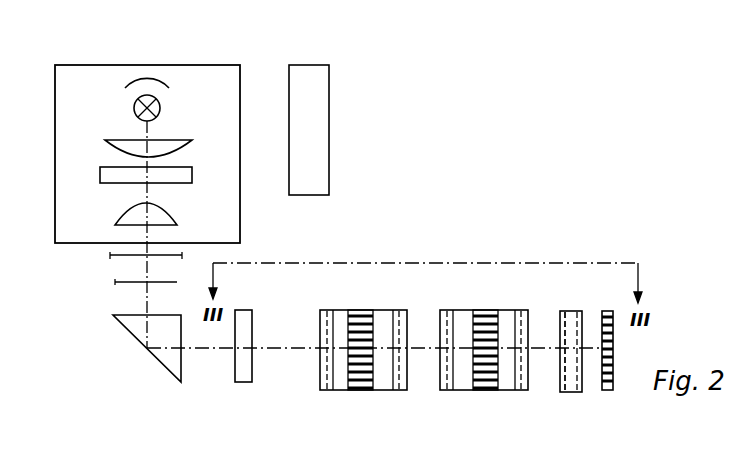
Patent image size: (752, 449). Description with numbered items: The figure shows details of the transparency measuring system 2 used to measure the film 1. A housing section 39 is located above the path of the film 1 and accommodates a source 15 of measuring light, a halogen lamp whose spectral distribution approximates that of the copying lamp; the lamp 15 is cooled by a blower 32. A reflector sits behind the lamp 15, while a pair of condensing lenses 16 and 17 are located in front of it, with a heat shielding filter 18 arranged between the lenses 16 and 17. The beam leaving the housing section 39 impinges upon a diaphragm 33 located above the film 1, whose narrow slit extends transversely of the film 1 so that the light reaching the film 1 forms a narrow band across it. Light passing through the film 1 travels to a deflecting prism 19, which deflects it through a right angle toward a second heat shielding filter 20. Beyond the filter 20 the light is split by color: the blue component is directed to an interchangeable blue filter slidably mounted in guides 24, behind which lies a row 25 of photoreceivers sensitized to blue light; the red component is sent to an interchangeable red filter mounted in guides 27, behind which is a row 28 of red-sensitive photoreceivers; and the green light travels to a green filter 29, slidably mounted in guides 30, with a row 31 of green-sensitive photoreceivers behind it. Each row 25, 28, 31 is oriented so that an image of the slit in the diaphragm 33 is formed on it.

The transparency measuring system 2 is at (229, 38).
The housing section 39 is at (66, 64).
The light source 15 is at (142, 77).
The condensing lens 16 is at (176, 142).
The heat shielding filter 18 is at (192, 177).
The condensing lens 17 is at (168, 213).
The diaphragm 33 is at (110, 258).
The film 1 is at (115, 283).
The deflecting prism 19 is at (163, 370).
The second heat shielding filter 20 is at (244, 383).
The guides 24 is at (363, 357).
The row of blue light photoreceivers 25 is at (370, 388).
The guides 27 is at (484, 357).
The row of red light photoreceivers 28 is at (486, 386).
The green filter 29 is at (569, 311).
The guides 30 is at (578, 393).
The row of green light photoreceivers 31 is at (612, 378).
The blower 32 is at (318, 121).